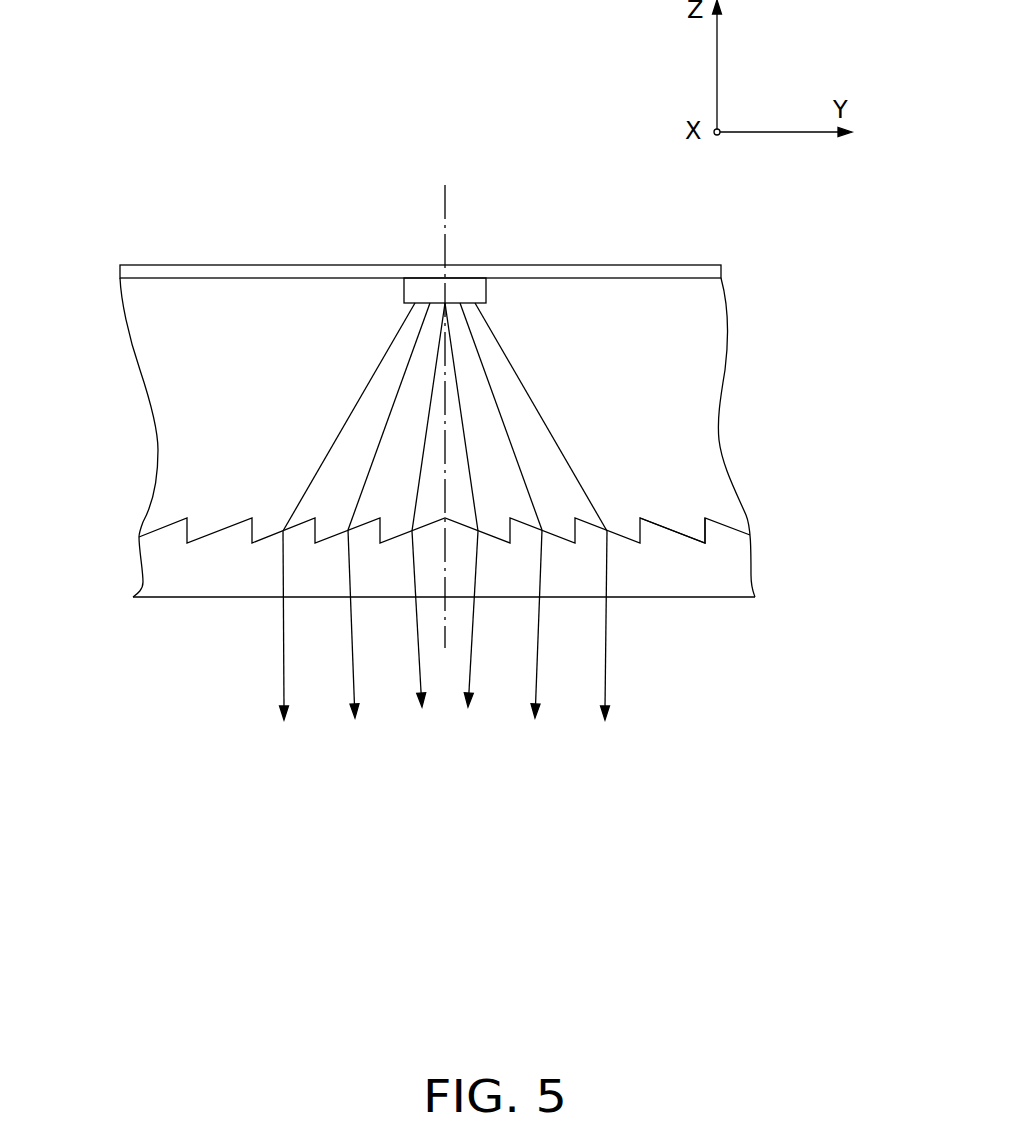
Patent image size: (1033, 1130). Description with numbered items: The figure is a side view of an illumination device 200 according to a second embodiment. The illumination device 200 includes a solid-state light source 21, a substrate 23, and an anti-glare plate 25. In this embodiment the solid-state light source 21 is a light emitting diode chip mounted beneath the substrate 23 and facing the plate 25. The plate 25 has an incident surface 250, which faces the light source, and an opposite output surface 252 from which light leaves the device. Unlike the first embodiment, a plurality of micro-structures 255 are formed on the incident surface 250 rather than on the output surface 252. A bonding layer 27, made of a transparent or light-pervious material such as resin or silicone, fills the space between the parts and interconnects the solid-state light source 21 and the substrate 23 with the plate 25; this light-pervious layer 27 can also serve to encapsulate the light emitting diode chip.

The illumination device 200 is at (533, 203).
The solid-state light source 21 is at (473, 287).
The substrate 23 is at (708, 268).
The bonding layer 27 is at (188, 420).
The anti-glare plate 25 is at (480, 544).
The incident surface 250 is at (642, 535).
The micro-structures 255 is at (713, 535).
The output surface 252 is at (638, 603).